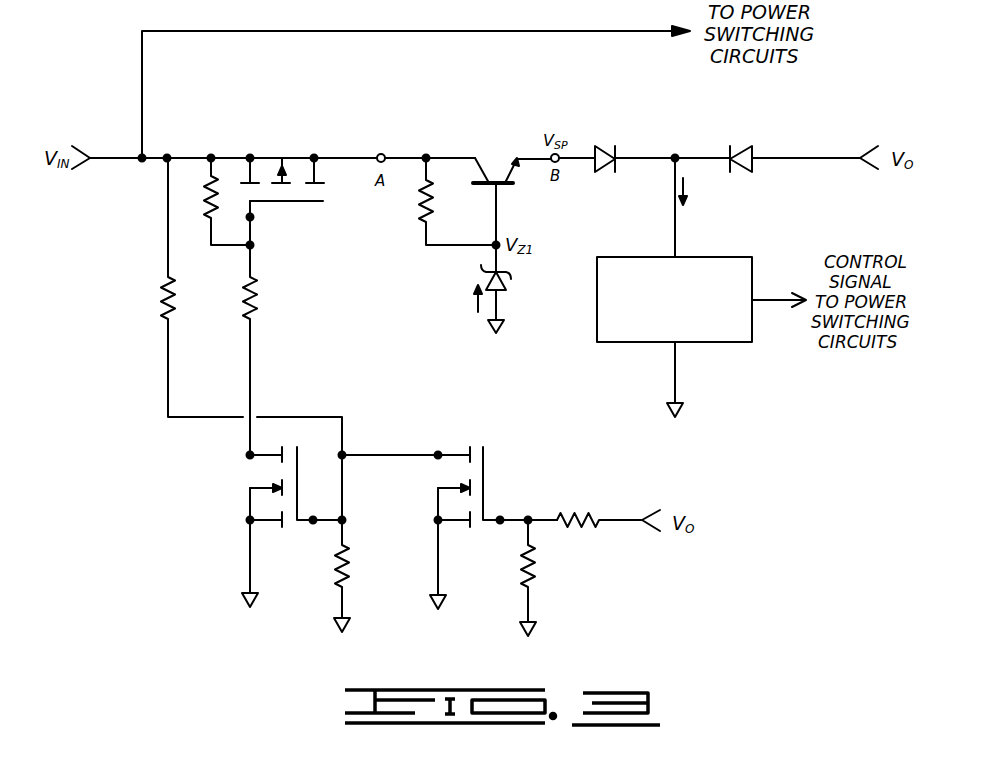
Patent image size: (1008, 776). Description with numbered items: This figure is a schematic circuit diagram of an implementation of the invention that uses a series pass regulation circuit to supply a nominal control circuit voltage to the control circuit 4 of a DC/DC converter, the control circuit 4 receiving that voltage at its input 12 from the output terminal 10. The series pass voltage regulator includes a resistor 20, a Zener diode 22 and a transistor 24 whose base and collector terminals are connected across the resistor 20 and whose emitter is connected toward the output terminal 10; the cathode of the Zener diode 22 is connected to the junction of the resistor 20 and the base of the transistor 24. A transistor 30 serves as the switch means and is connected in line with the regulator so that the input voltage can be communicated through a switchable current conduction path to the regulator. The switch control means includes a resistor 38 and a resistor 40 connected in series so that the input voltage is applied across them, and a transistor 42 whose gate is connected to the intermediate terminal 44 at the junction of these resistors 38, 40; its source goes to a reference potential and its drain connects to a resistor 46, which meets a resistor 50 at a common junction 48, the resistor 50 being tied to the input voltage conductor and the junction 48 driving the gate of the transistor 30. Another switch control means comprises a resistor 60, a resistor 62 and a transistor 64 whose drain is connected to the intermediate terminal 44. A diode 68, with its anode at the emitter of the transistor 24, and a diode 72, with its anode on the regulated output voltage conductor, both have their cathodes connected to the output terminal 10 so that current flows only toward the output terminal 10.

The control circuit 4 is at (636, 345).
The output terminal 10 is at (676, 150).
The input 12 is at (672, 252).
The resistor 20 is at (420, 209).
The Zener diode 22 is at (505, 292).
The transistor 24 is at (482, 172).
The transistor 30 is at (285, 204).
The resistor 38 is at (161, 307).
The resistor 40 is at (336, 572).
The transistor 42 is at (300, 486).
The intermediate terminal 44 is at (346, 518).
The resistor 46 is at (245, 307).
The common junction 48 is at (253, 246).
The resistor 50 is at (213, 208).
The resistor 60 is at (590, 528).
The resistor 62 is at (523, 566).
The transistor 64 is at (487, 490).
The diode 68 is at (600, 172).
The diode 72 is at (752, 150).